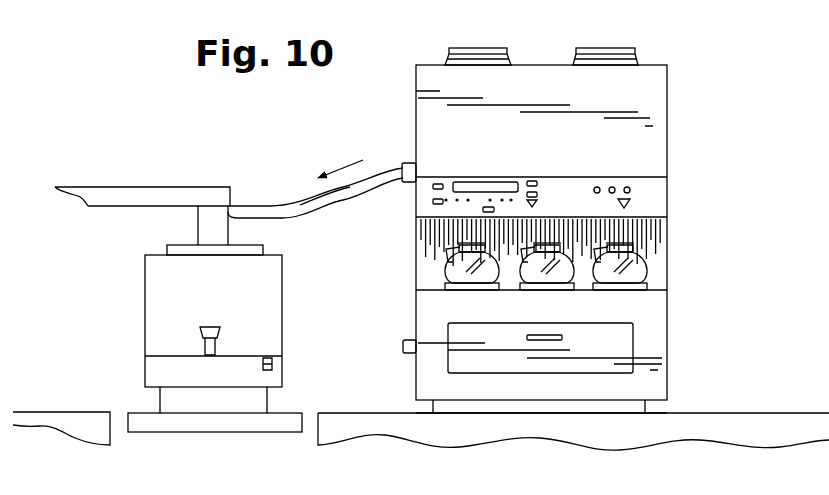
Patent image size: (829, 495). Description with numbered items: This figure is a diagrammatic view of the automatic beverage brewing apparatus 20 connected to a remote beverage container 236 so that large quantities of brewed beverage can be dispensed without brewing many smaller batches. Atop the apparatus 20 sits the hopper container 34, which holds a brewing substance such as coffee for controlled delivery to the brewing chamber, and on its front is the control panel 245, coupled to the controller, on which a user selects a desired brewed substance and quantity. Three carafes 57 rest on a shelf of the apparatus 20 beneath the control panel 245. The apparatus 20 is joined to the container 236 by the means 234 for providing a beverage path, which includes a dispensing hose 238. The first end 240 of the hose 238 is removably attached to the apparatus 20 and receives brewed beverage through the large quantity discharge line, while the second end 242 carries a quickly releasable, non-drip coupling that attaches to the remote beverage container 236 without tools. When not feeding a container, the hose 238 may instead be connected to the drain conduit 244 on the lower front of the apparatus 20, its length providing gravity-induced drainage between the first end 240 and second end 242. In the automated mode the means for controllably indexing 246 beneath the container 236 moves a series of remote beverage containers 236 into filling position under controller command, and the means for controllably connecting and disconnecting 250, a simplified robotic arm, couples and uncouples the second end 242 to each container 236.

The automatic beverage brewing apparatus 20 is at (676, 112).
The hopper container 34 is at (448, 52).
The carafes on warmer shelf 57 is at (628, 270).
The control panel 245 is at (652, 196).
The drain conduit 244 is at (405, 341).
The first end 240 is at (408, 163).
The means for providing a beverage path 234 is at (290, 175).
The dispensing hose 238 is at (352, 187).
The second end 242 is at (197, 227).
The means for controllably connecting and disconnecting 250 is at (156, 186).
The remote beverage container 236 is at (140, 312).
The means for controllably indexing 246 is at (126, 418).